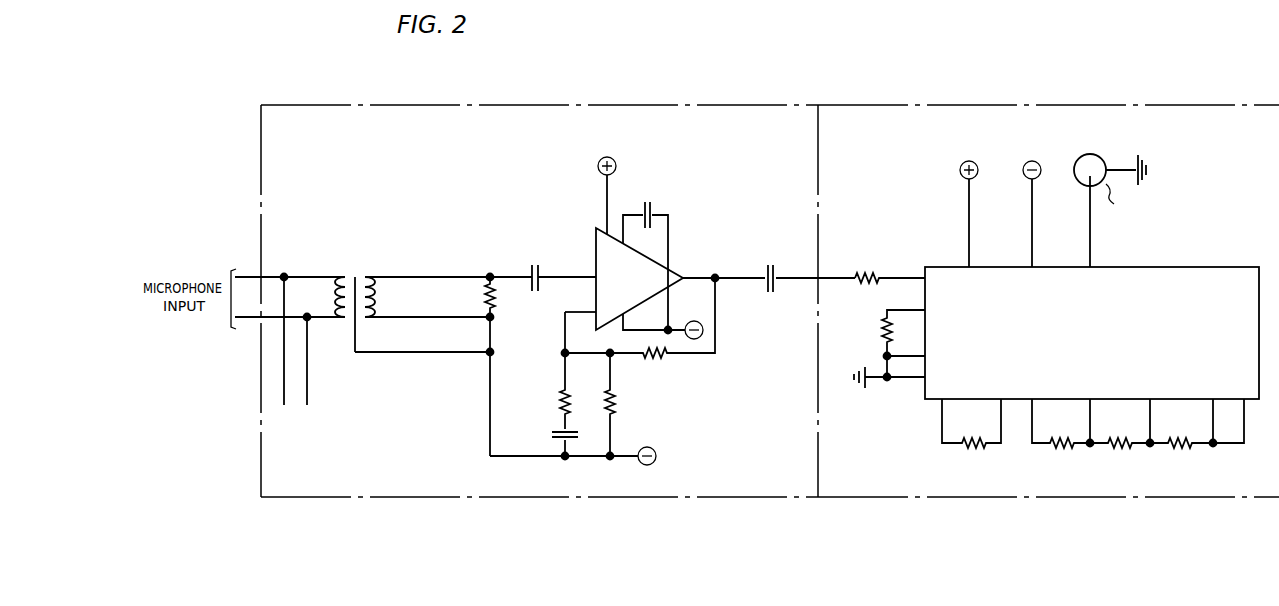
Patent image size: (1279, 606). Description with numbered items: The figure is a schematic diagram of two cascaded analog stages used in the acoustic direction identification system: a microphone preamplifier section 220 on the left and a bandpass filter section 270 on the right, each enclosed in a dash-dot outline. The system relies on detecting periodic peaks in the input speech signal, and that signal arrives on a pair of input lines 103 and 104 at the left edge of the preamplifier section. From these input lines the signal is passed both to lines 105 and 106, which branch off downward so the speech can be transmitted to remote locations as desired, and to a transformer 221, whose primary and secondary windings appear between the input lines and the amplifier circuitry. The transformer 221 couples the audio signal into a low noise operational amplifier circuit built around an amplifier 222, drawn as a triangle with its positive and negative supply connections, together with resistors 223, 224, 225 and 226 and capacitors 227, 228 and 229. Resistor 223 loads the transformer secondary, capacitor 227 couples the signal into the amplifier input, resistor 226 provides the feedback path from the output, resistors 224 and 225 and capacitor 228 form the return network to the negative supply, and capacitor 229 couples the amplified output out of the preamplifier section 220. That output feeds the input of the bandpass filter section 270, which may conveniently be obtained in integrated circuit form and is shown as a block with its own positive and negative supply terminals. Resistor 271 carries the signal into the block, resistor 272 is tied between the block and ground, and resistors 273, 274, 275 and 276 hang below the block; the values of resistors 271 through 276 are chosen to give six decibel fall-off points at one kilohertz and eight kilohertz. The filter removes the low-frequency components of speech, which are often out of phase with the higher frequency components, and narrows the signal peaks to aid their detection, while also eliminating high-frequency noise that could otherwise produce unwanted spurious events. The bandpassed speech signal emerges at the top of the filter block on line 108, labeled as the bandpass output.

The input line 103 is at (323, 276).
The input line 104 is at (319, 320).
The line 105 is at (284, 370).
The line 106 is at (307, 392).
The line 108 is at (1093, 239).
The microphone preamplifier section 220 is at (777, 105).
The transformer 221 is at (412, 302).
The amplifier 222 is at (596, 241).
The resistor 223 is at (476, 365).
The resistor 224 is at (550, 370).
The resistor 225 is at (623, 404).
The resistor 226 is at (640, 329).
The capacitor 227 is at (543, 268).
The capacitor 228 is at (554, 442).
The capacitor 229 is at (785, 268).
The bandpass filter section 270 is at (1238, 105).
The resistor 271 is at (890, 268).
The resistor 272 is at (889, 349).
The resistor 273 is at (971, 423).
The resistor 274 is at (1063, 423).
The resistor 275 is at (1122, 423).
The resistor 276 is at (1197, 423).